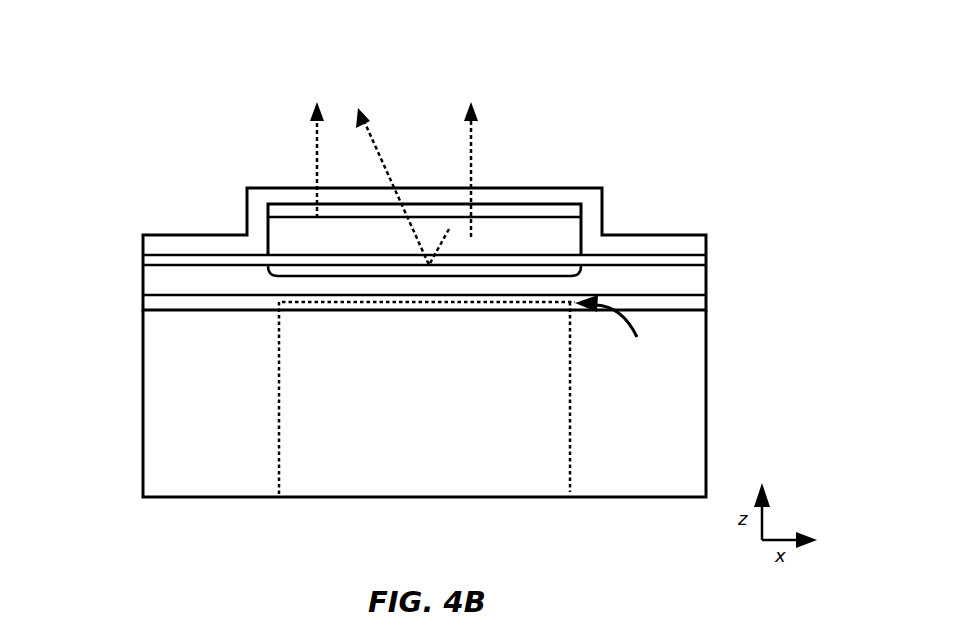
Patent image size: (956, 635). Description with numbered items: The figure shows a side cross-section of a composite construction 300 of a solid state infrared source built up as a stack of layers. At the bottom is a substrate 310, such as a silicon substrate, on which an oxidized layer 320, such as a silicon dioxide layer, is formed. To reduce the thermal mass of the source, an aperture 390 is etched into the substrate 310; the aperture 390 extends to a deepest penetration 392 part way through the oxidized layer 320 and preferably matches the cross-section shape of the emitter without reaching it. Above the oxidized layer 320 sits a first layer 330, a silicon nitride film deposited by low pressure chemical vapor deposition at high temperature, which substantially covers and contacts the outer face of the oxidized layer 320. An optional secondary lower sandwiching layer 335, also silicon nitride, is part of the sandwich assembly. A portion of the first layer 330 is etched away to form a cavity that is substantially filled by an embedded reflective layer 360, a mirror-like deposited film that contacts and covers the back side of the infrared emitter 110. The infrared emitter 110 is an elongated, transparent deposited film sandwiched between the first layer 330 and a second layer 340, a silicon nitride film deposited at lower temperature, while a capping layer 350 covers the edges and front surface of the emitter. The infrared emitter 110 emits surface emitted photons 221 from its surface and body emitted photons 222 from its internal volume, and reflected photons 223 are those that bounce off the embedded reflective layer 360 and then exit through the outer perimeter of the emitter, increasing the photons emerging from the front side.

The first composite construction 300 is at (146, 84).
The substrate 310 is at (142, 452).
The oxidized layer 320 is at (708, 303).
The first layer 330 is at (142, 283).
The secondary lower sandwiching layer 335 is at (708, 260).
The second layer 340 is at (545, 203).
The capping layer 350 is at (668, 233).
The embedded reflective layer 360 is at (318, 265).
The infrared emitter 110 is at (532, 245).
The aperture 390 is at (572, 400).
The deepest penetration 392 is at (624, 332).
The surface emitted photons 221 is at (315, 128).
The body emitted photons 222 is at (473, 135).
The reflected photons 223 is at (380, 147).